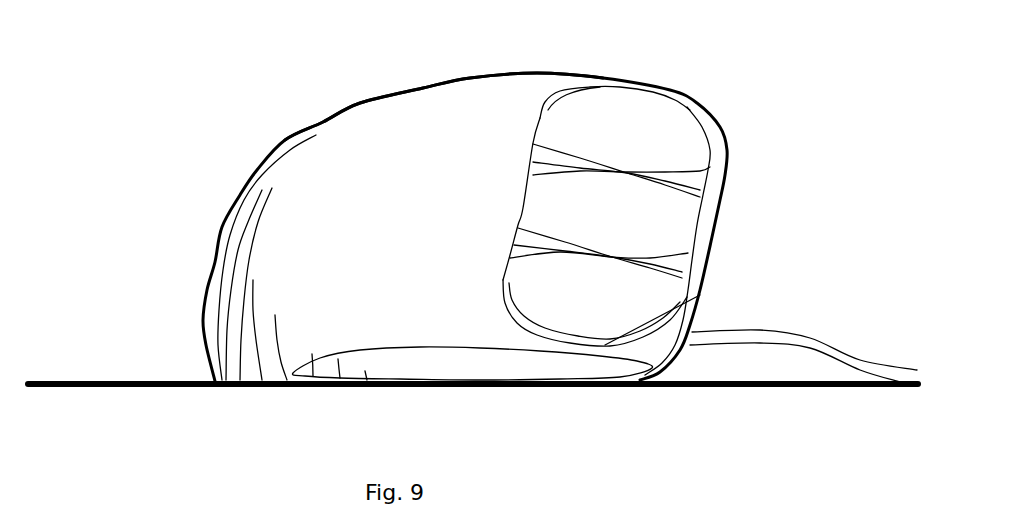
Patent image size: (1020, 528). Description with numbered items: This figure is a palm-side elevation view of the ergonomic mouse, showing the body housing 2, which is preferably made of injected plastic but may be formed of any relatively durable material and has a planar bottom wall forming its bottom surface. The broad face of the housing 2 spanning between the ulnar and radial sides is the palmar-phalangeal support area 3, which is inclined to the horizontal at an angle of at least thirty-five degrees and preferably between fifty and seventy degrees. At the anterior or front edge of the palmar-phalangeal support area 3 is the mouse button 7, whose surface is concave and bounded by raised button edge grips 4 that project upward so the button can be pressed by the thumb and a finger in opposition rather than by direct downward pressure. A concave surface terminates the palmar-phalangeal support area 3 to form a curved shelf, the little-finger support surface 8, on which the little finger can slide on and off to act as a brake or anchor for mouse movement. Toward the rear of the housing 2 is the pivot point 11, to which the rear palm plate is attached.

The body housing 2 is at (203, 323).
The palmar-phalangeal support area 3 is at (448, 150).
The raised button edge grip 4 is at (683, 112).
The mouse button 7 is at (575, 127).
The little-finger support surface 8 is at (500, 375).
The pivot point 11 is at (810, 340).